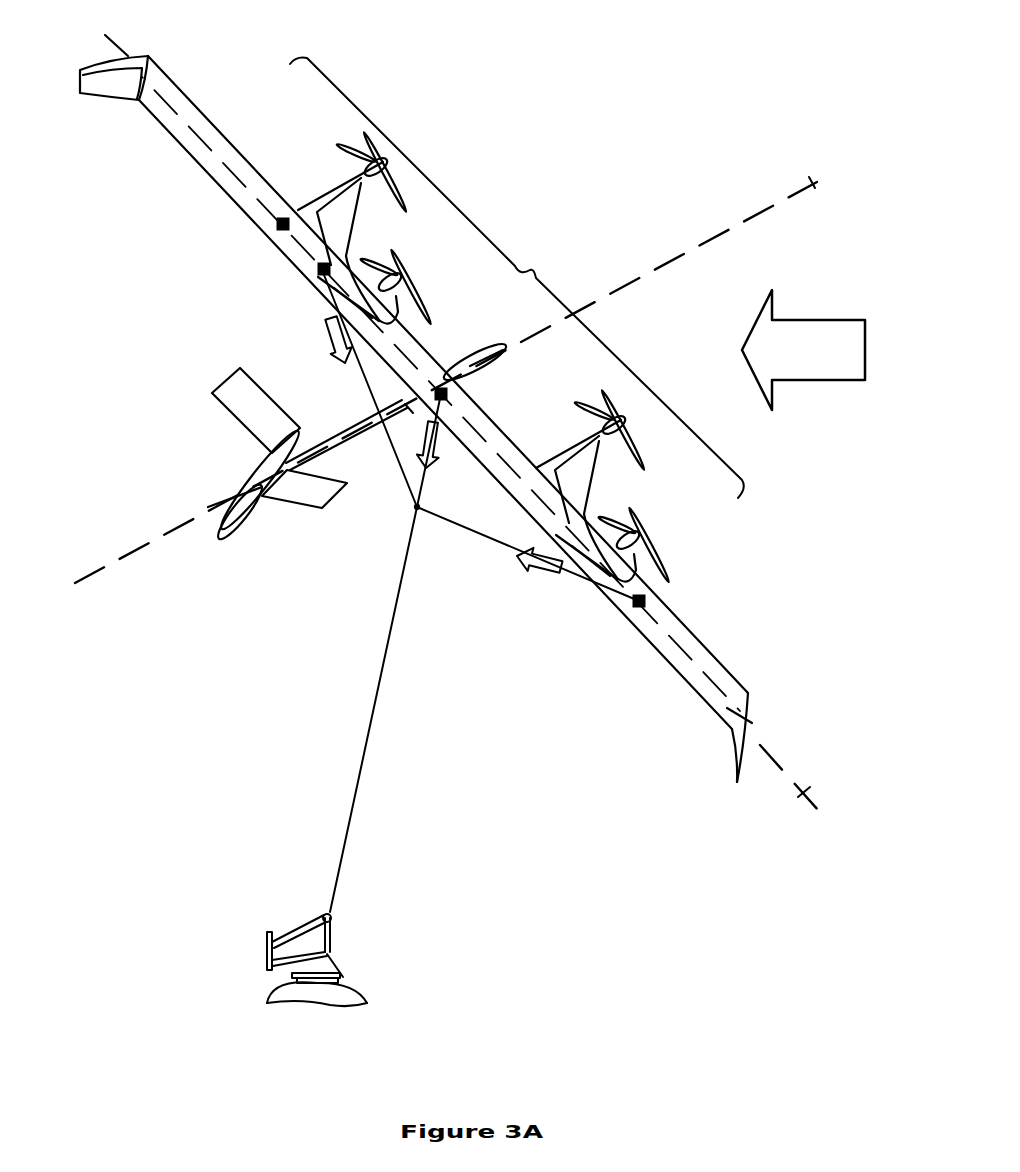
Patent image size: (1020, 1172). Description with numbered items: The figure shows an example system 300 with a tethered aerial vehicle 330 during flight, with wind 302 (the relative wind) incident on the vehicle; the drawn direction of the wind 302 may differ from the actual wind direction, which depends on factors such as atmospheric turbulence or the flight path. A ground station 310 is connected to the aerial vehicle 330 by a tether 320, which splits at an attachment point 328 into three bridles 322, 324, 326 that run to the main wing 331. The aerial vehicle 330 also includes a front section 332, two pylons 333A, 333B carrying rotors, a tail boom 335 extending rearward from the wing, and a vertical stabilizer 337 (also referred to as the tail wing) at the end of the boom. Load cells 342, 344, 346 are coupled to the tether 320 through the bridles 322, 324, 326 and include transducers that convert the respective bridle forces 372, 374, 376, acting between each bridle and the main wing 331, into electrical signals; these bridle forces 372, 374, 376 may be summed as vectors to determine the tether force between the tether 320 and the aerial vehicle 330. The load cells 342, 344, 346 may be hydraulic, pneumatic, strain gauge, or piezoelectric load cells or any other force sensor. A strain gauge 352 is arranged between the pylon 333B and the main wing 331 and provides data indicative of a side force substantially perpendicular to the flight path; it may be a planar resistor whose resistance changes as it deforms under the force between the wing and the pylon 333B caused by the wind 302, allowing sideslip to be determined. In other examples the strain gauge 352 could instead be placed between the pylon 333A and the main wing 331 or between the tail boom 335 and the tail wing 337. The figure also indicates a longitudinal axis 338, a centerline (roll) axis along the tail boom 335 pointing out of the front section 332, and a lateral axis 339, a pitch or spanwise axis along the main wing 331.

The system 300 is at (543, 74).
The wind 302 is at (797, 382).
The ground station 310 is at (267, 940).
The tether 320 is at (360, 748).
The bridle 322 is at (456, 528).
The bridle 324 is at (425, 487).
The bridle 326 is at (352, 386).
The attachment point 328 is at (415, 505).
The aerial vehicle 330 is at (517, 278).
The main wing 331 is at (198, 161).
The front section 332 is at (470, 354).
The pylon 333A is at (597, 472).
The pylon 333B is at (352, 218).
The tail boom 335 is at (333, 436).
The vertical stabilizer 337 is at (238, 534).
The longitudinal axis 338 is at (812, 185).
The lateral axis 339 is at (804, 792).
The load cell 342 is at (638, 620).
The load cell 344 is at (460, 395).
The load cell 346 is at (283, 206).
The strain gauge 352 is at (306, 268).
The bridle force 372 is at (542, 574).
The bridle force 374 is at (438, 464).
The bridle force 376 is at (324, 322).